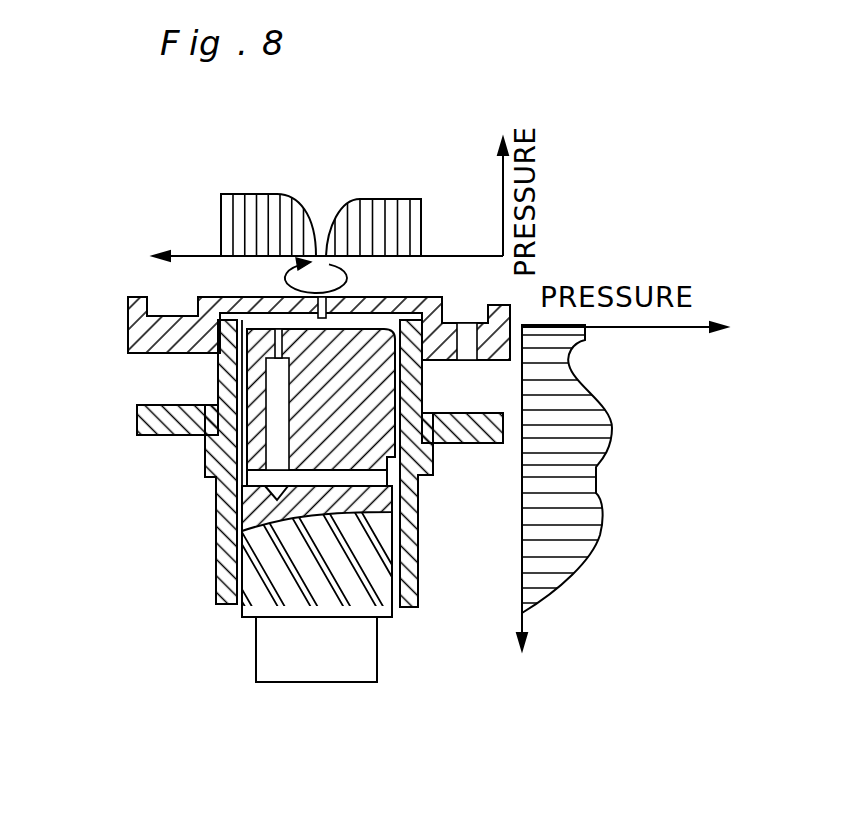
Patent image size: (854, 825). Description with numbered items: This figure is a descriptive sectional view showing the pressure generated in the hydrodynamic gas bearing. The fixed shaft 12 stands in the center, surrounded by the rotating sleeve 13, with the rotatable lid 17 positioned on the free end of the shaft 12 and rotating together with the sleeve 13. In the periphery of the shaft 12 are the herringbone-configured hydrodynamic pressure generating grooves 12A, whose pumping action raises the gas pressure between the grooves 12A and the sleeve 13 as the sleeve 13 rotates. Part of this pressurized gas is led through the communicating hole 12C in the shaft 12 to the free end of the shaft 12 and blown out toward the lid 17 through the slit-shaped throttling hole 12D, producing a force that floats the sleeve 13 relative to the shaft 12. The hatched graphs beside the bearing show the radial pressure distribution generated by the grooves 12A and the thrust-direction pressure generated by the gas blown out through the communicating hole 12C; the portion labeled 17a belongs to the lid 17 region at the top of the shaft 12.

The shaft 12 is at (288, 656).
The herringbone-configured hydrodynamic pressure generating grooves 12A is at (273, 555).
The communicating hole 12C is at (300, 475).
The throttling hole 12D is at (263, 340).
The sleeve 13 is at (150, 421).
The lid 17 is at (128, 316).
The rotating stem 17a is at (313, 296).